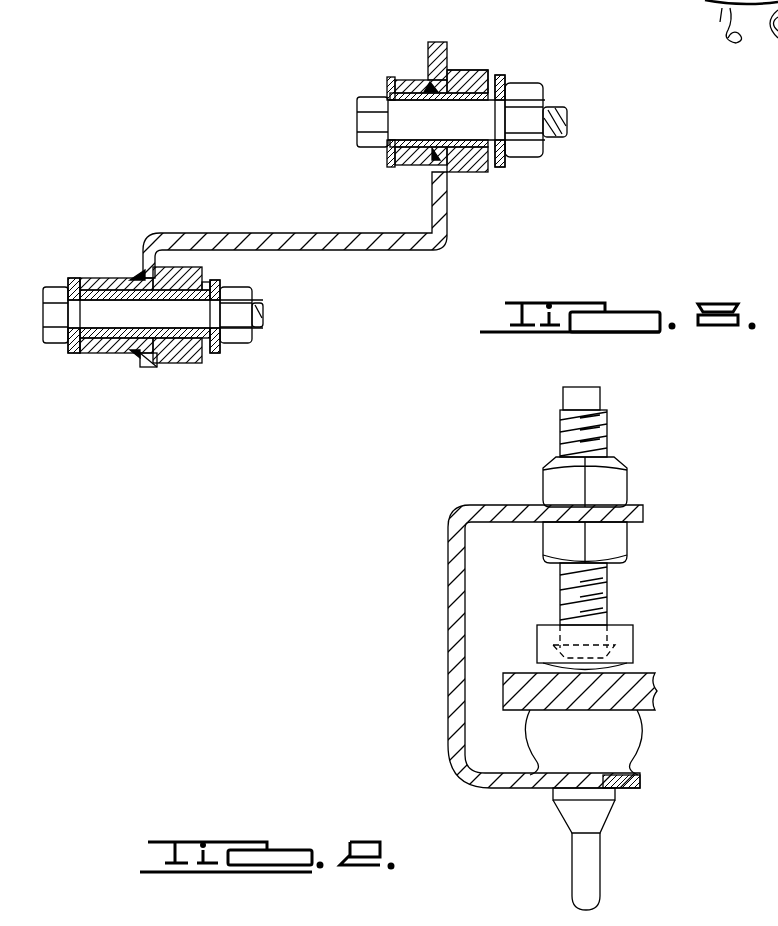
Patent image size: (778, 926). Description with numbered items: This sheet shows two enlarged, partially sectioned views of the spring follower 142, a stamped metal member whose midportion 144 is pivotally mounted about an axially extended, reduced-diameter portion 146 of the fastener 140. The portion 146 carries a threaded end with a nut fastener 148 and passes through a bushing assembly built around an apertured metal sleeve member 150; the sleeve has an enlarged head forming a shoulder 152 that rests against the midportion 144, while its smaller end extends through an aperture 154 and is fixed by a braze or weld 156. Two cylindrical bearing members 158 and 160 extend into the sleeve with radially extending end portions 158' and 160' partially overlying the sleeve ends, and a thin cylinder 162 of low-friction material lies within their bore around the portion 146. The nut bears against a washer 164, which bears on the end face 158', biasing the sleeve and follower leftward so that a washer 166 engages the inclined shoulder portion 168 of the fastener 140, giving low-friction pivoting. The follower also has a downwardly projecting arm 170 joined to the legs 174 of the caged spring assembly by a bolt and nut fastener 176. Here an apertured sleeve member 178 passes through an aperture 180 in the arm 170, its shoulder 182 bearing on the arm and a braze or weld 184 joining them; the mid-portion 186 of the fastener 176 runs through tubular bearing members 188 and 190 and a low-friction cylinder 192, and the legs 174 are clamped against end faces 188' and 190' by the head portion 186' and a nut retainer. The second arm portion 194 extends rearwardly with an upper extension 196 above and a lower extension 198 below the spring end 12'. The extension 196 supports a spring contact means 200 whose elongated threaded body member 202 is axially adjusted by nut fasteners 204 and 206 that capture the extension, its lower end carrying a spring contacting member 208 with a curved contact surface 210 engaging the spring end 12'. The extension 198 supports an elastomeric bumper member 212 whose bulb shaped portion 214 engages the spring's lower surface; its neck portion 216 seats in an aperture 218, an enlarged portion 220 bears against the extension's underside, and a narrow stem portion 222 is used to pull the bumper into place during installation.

In FIG. 9, the spring end 12' is at (612, 691).
In FIG. 8, the fastener 140 is at (365, 103).
In FIG. 8, the spring follower 142 is at (384, 253).
In FIG. 9, the spring follower 142 is at (446, 612).
In FIG. 8, the midportion 144 is at (443, 42).
In FIG. 8, the axially extended portion 146 is at (530, 90).
In FIG. 8, the nut fastener 148 is at (457, 180).
In FIG. 8, the apertured metal sleeve member 150 is at (463, 74).
In FIG. 8, the shoulder 152 is at (455, 168).
In FIG. 8, the aperture 154 is at (430, 162).
In FIG. 8, the braze or weld 156 is at (430, 78).
In FIG. 8, the bearing member 158 is at (482, 66).
In FIG. 8, the radially extending end portion 158' is at (535, 96).
In FIG. 8, the bearing member 160 is at (439, 120).
In FIG. 8, the radially extending end portion 160' is at (400, 61).
In FIG. 8, the thin cylinder of low friction material 162 is at (560, 125).
In FIG. 8, the washer 164 is at (500, 160).
In FIG. 8, the washer 166 is at (388, 152).
In FIG. 8, the inclined shoulder portion 168 is at (358, 135).
In FIG. 8, the arm 170 is at (150, 262).
In FIG. 8, the legs 174 is at (74, 278).
In FIG. 8, the bolt and nut fastener 176 is at (268, 340).
In FIG. 8, the apertured sleeve member 178 is at (190, 355).
In FIG. 8, the aperture 180 is at (155, 367).
In FIG. 8, the shoulder 182 is at (136, 270).
In FIG. 8, the braze or weld 184 is at (133, 358).
In FIG. 8, the mid-portion 186 is at (226, 363).
In FIG. 8, the head portion 186' is at (62, 343).
In FIG. 8, the tubular bearing member 188 is at (190, 249).
In FIG. 8, the end face 188' is at (246, 272).
In FIG. 8, the tubular bearing member 190 is at (116, 264).
In FIG. 8, the end face 190' is at (110, 381).
In FIG. 8, the cylinder of low friction material 192 is at (98, 298).
In FIG. 9, the second arm portion 194 is at (452, 660).
In FIG. 9, the upper extension 196 is at (505, 510).
In FIG. 9, the lower extension 198 is at (530, 790).
In FIG. 9, the spring contact means 200 is at (630, 603).
In FIG. 9, the elongated threaded body member 202 is at (585, 420).
In FIG. 9, the nut fastener 204 is at (615, 547).
In FIG. 9, the nut fastener 206 is at (615, 481).
In FIG. 9, the spring contacting member 208 is at (630, 632).
In FIG. 9, the curved contact surface 210 is at (640, 668).
In FIG. 9, the elastomeric bumper member 212 is at (642, 760).
In FIG. 9, the bulb shaped portion 214 is at (630, 731).
In FIG. 9, the neck portion 216 is at (640, 782).
In FIG. 9, the aperture 218 is at (565, 800).
In FIG. 9, the enlarged portion 220 is at (597, 816).
In FIG. 9, the narrow stem portion 222 is at (590, 886).